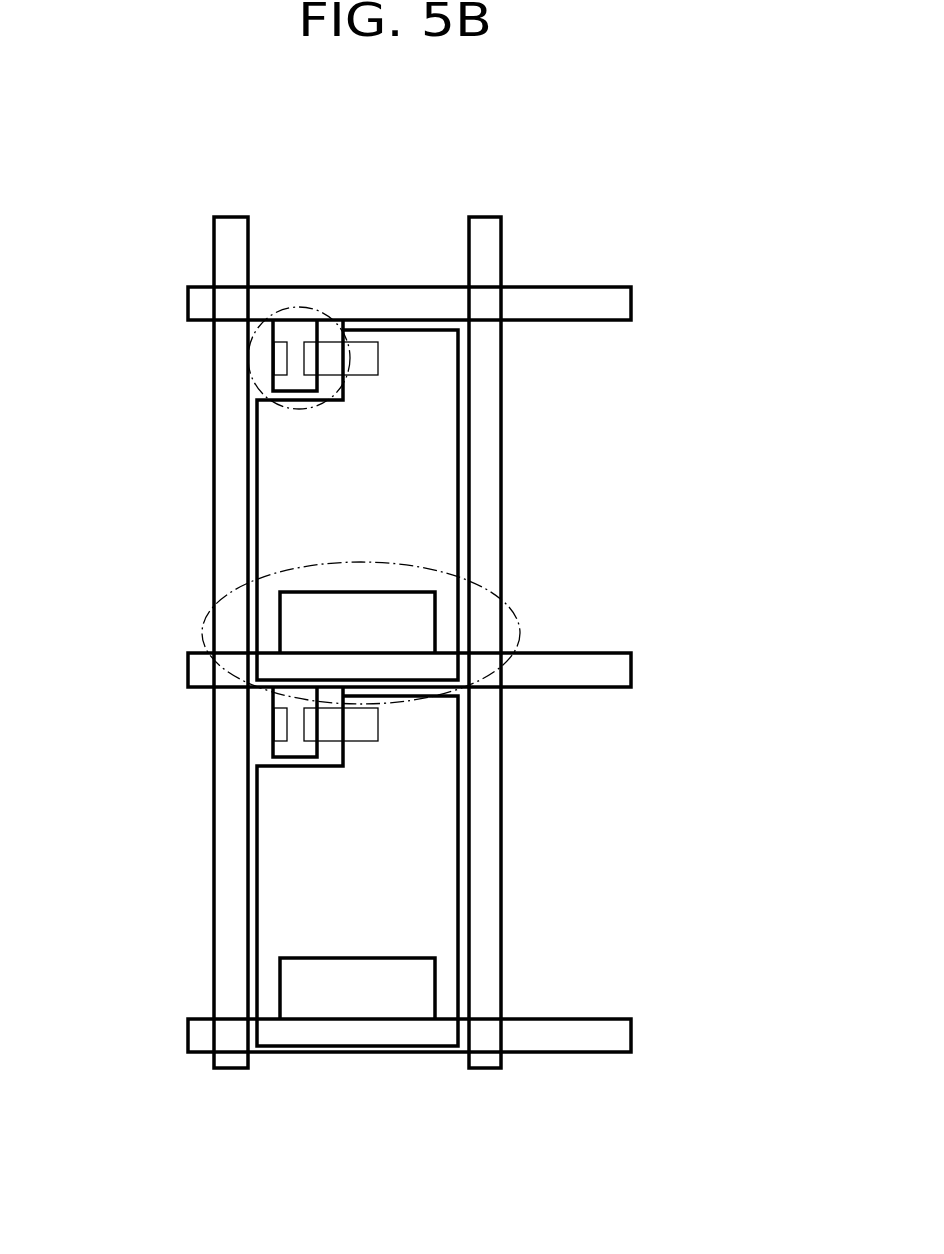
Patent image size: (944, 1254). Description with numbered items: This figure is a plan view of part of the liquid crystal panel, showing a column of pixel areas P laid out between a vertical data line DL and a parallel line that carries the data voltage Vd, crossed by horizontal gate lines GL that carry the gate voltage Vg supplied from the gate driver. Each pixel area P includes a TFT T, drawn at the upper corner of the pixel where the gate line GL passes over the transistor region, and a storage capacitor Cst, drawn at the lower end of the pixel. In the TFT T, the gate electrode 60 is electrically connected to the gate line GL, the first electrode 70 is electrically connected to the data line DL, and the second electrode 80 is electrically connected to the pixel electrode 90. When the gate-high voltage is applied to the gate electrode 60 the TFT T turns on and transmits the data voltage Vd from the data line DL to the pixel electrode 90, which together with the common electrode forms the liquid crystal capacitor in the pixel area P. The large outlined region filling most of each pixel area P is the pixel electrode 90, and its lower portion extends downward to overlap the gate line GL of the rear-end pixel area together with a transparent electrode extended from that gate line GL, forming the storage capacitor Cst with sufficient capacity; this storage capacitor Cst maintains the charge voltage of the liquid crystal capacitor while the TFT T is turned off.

The gate electrode 60 is at (289, 384).
The first electrode 70 is at (278, 355).
The second electrode 80 is at (309, 363).
The pixel electrode 90 is at (257, 547).
The data voltage Vd is at (231, 203).
The data line DL is at (485, 225).
The gate line GL is at (631, 304).
The gate voltage Vg is at (177, 304).
The pixel area P is at (465, 410).
The storage capacitor Cst is at (359, 562).
The TFT T is at (298, 307).